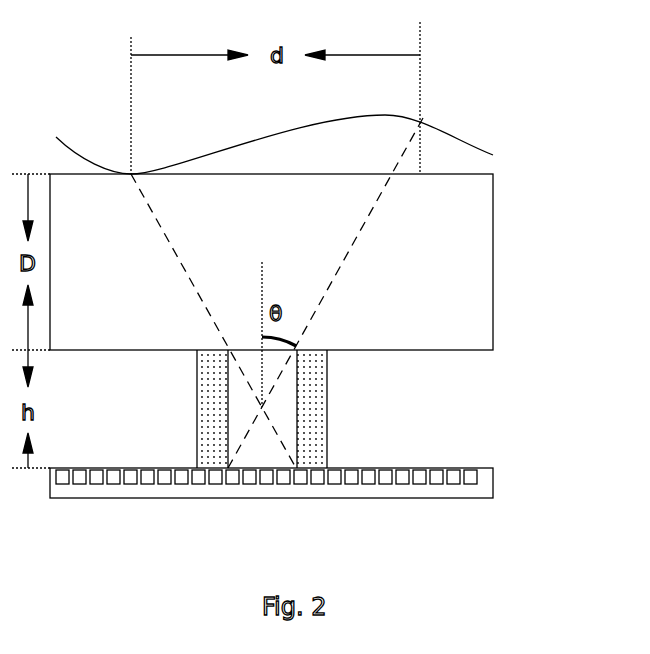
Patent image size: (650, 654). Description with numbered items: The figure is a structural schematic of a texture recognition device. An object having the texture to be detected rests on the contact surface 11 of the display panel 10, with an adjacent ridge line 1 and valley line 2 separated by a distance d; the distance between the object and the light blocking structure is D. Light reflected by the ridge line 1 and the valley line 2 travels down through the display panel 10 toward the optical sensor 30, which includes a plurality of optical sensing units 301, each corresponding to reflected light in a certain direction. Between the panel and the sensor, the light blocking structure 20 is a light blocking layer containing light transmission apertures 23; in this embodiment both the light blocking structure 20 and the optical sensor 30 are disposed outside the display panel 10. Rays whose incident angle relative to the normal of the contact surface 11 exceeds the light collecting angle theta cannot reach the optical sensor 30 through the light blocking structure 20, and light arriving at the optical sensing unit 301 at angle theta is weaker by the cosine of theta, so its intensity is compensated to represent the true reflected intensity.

The ridge line 1 is at (137, 157).
The valley line 2 is at (429, 101).
The display panel 10 is at (445, 262).
The contact surface 11 is at (422, 174).
The light blocking structure 20 is at (323, 410).
The light transmission aperture 23 is at (288, 382).
The optical sensor 30 is at (493, 484).
The optical sensing unit 301 is at (470, 477).